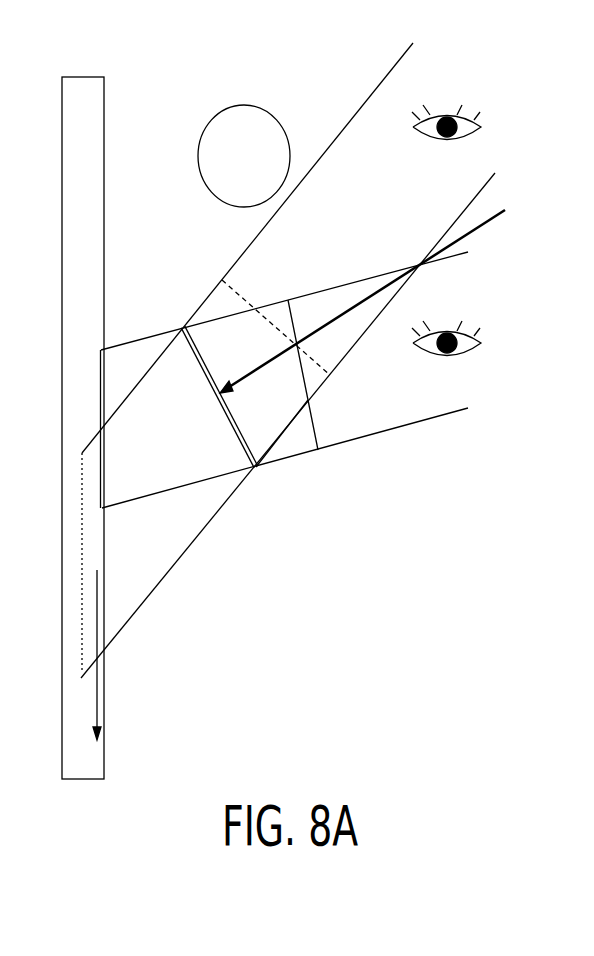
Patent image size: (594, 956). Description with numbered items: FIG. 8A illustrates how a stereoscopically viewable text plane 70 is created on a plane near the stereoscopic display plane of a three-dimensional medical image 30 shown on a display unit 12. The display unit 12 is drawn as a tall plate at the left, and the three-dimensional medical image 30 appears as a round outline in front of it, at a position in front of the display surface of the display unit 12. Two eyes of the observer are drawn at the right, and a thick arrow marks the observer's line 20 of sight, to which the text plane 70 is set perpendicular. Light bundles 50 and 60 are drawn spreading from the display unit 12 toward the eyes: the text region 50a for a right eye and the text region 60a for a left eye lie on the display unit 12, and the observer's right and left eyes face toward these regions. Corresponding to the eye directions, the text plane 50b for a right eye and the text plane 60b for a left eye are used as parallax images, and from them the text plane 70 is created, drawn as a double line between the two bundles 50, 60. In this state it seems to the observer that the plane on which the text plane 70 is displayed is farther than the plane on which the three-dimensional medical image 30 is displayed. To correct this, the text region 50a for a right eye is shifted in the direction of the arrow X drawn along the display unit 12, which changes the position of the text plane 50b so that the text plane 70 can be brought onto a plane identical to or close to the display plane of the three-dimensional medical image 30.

The display unit 12 is at (105, 100).
The line of sight 20 is at (486, 231).
The three-dimensional medical image 30 is at (280, 123).
The display light 50 is at (337, 360).
The text region for a right eye 50a is at (80, 531).
The text plane for a right eye 50b is at (238, 281).
The image light 60 is at (347, 380).
The text region for a left eye 60a is at (101, 382).
The text plane for a left eye 60b is at (316, 423).
The stereoscopically viewable text plane 70 is at (228, 420).
The arrow X is at (99, 692).